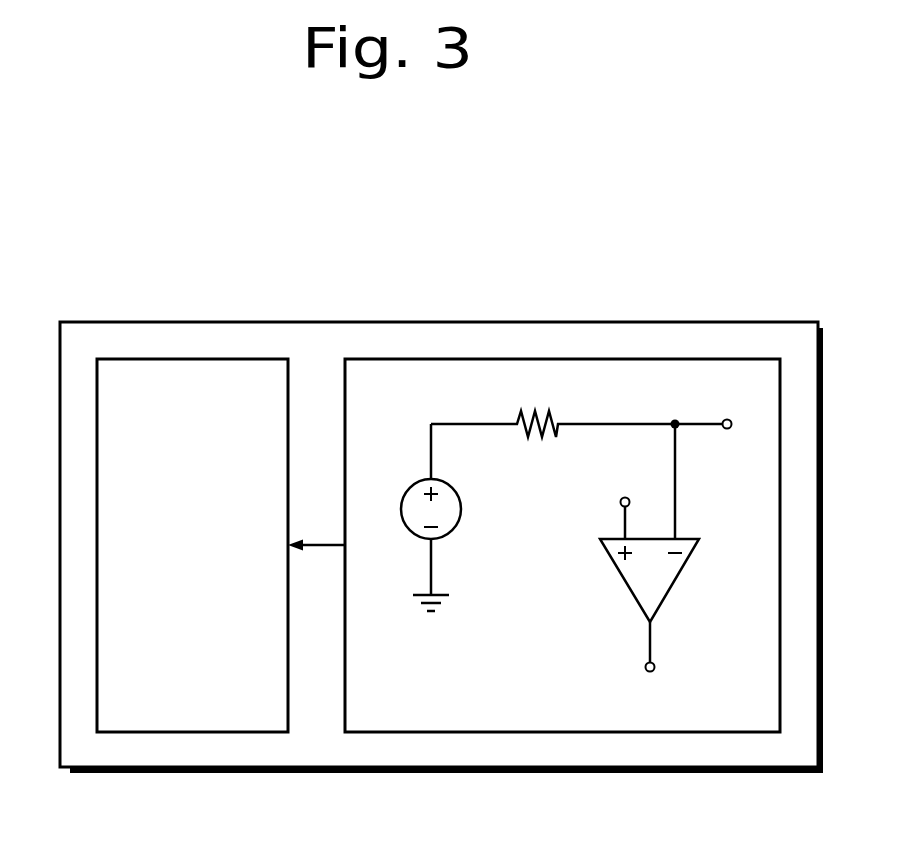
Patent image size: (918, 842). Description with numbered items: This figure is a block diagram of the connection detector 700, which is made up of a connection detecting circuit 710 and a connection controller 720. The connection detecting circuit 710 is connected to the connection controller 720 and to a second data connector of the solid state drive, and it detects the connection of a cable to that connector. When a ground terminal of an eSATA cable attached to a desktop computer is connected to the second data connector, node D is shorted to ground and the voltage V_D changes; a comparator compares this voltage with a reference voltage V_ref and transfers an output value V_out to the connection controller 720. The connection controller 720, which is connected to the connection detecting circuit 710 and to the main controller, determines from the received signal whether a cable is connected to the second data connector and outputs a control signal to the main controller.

The connection detector 700 is at (492, 322).
The connection detecting circuit 710 is at (678, 359).
The connection controller 720 is at (213, 359).